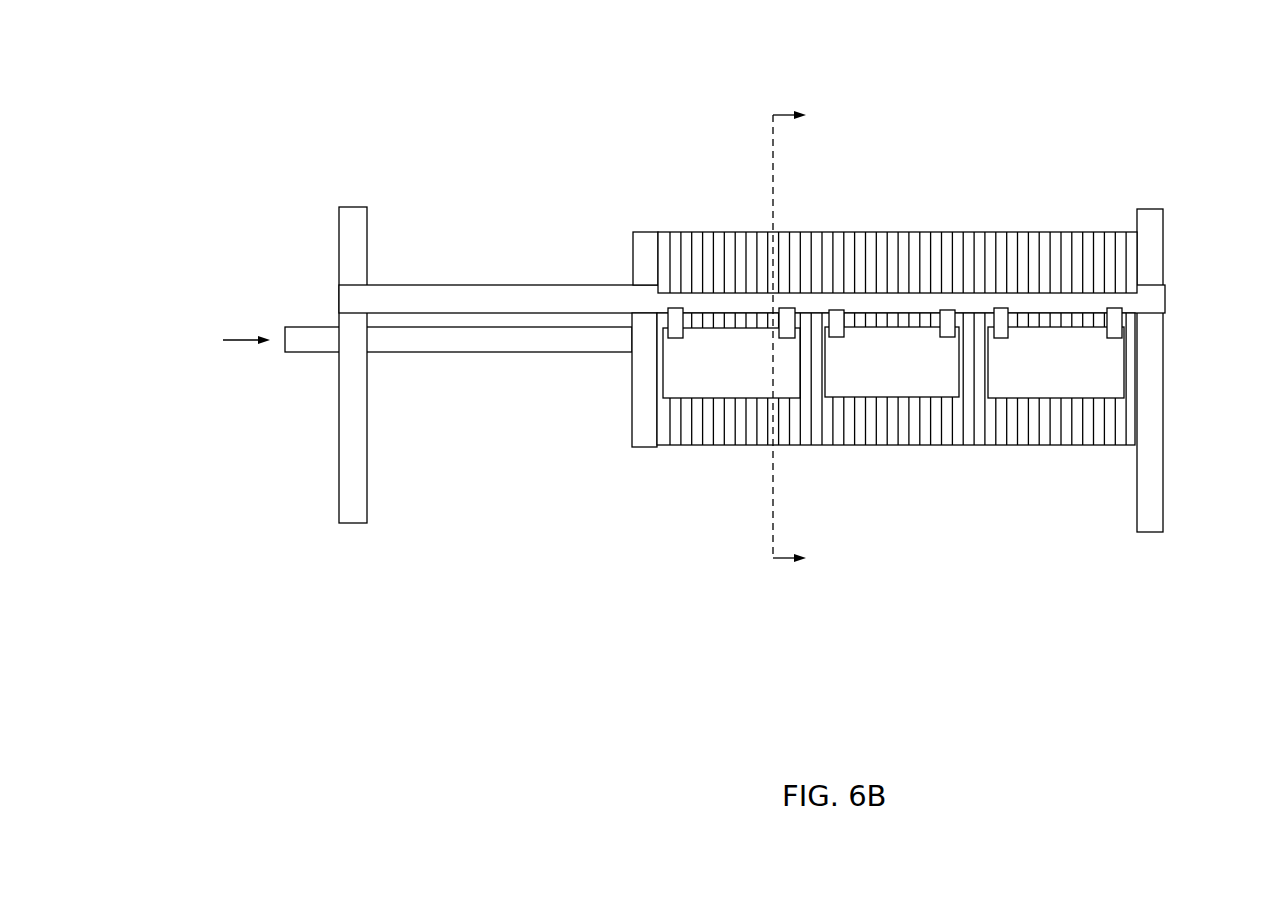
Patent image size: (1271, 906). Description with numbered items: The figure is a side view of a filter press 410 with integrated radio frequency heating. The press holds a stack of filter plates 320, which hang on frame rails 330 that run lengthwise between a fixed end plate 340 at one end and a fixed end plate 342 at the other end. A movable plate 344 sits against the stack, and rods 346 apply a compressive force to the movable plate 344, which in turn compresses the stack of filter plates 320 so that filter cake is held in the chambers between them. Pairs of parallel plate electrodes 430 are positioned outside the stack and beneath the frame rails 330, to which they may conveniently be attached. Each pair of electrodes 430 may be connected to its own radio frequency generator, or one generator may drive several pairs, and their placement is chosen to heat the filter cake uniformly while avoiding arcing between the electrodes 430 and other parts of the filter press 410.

The filter press 410 is at (599, 103).
The filter plates 320 is at (717, 422).
The frame rails 330 is at (572, 295).
The fixed end plate 340 is at (337, 273).
The fixed end plate 342 is at (1147, 368).
The movable plate 344 is at (642, 257).
The rods 346 is at (320, 338).
The parallel plate electrodes 430 is at (1057, 370).